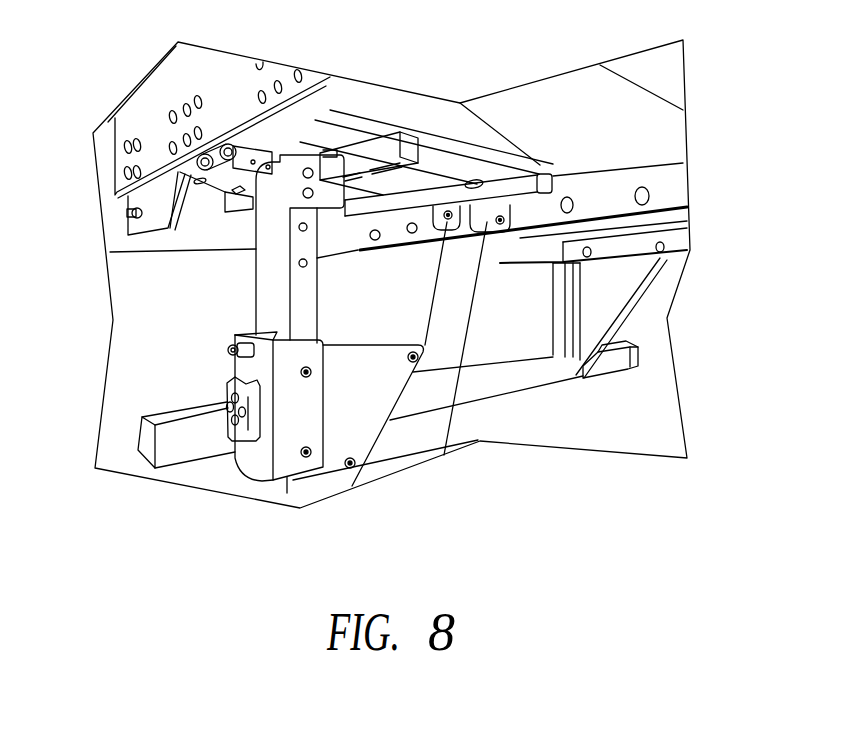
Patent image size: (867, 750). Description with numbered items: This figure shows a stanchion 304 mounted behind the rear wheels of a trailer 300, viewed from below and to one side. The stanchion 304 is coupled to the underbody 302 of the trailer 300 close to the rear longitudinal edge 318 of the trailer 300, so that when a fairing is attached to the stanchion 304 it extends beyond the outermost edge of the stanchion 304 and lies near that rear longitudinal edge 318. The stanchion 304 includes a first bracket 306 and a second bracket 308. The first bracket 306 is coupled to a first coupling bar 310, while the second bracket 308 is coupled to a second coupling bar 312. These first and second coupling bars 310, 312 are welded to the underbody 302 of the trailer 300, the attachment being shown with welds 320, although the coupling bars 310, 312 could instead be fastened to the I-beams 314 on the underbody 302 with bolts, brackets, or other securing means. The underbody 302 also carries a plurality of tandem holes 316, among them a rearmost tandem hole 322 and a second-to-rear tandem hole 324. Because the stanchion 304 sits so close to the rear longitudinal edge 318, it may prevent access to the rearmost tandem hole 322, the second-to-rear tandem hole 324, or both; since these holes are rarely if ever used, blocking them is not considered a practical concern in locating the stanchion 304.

The trailer 300 is at (144, 112).
The underbody 302 is at (550, 112).
The stanchion 304 is at (415, 448).
The first bracket 306 is at (508, 255).
The second bracket 308 is at (290, 228).
The first coupling bar 310 is at (514, 190).
The second coupling bar 312 is at (368, 152).
The I-beams 314 is at (298, 146).
The tandem holes 316 is at (652, 194).
The rear longitudinal edge 318 is at (136, 268).
The welds 320 is at (470, 181).
The rearmost tandem hole 322 is at (373, 240).
The second-to-rear tandem hole 324 is at (413, 222).